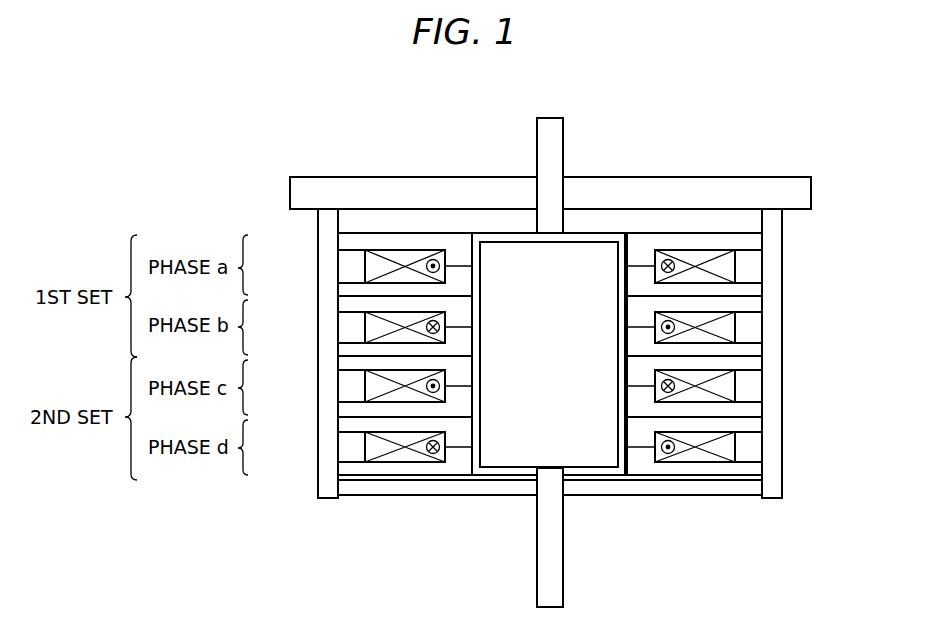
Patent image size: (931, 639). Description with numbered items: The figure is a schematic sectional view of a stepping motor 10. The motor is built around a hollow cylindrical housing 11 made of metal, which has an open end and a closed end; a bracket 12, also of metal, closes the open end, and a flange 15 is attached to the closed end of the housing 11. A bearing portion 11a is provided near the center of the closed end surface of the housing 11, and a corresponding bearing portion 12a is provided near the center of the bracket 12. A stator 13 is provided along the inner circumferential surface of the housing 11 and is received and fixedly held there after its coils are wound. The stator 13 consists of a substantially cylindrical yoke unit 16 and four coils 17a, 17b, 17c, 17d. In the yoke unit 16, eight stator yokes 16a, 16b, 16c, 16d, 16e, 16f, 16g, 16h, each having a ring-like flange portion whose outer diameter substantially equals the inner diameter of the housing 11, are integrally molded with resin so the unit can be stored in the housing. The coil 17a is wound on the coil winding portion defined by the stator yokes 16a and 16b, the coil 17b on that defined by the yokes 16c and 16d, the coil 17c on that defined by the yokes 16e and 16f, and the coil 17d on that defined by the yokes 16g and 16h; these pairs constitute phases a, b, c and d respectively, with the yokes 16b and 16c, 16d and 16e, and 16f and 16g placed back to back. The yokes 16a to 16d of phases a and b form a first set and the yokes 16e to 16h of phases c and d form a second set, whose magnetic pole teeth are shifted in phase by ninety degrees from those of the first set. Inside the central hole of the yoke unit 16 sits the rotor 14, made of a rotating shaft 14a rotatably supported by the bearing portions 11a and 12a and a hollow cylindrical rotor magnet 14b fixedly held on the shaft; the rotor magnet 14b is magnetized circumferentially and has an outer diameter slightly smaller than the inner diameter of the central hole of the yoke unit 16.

The stepping motor 10 is at (742, 111).
The housing 11 is at (771, 499).
The bearing portion 11a is at (562, 221).
The bracket 12 is at (395, 490).
The bearing portion 12a is at (536, 481).
The stator 13 is at (616, 442).
The rotor 14 is at (527, 365).
The rotating shaft 14a is at (562, 130).
The rotor magnet 14b is at (582, 458).
The flange 15 is at (768, 183).
The yoke unit 16 is at (847, 235).
The stator yoke 16a is at (750, 245).
The stator yoke 16b is at (750, 286).
The stator yoke 16c is at (750, 305).
The stator yoke 16d is at (750, 348).
The stator yoke 16e is at (750, 364).
The stator yoke 16f is at (750, 407).
The stator yoke 16g is at (750, 425).
The stator yoke 16h is at (750, 468).
The coil 17a is at (372, 269).
The coil 17b is at (372, 328).
The coil 17c is at (372, 391).
The coil 17d is at (372, 451).